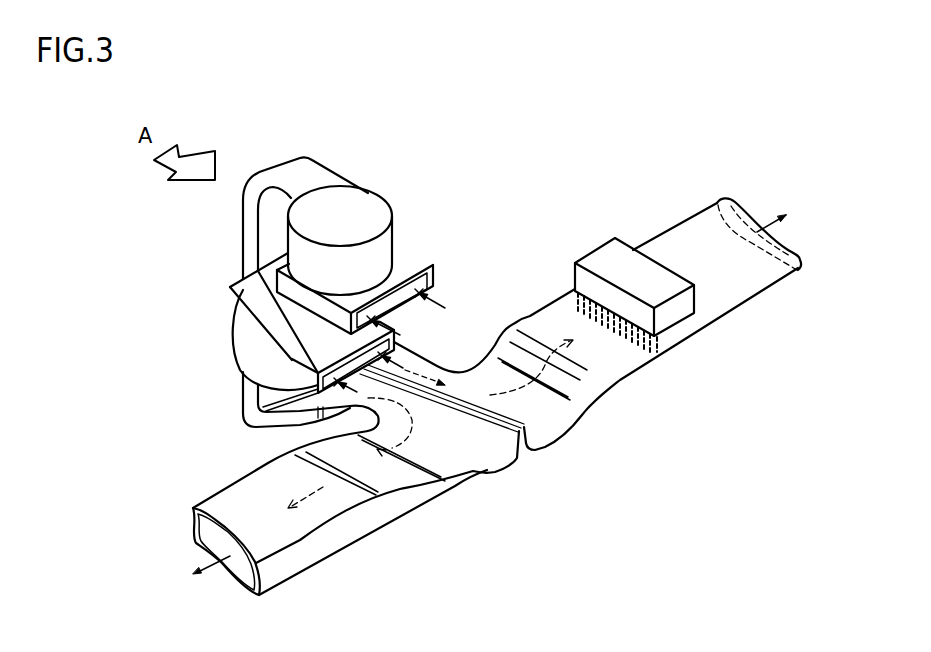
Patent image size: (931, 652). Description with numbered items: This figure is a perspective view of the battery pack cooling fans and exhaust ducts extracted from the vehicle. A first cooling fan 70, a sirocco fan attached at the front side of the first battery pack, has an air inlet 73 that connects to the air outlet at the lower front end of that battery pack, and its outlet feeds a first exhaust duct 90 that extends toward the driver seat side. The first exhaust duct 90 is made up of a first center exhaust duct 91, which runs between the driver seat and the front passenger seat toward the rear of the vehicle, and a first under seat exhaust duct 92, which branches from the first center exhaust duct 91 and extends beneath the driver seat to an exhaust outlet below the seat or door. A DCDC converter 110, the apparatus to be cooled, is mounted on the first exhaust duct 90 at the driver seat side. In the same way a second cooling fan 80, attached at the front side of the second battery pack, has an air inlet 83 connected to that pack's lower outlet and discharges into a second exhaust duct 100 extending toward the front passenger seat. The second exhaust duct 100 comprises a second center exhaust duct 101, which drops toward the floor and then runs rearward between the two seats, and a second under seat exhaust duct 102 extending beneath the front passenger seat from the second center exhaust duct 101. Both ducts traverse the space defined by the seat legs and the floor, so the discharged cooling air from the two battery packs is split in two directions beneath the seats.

The first cooling fan 70 is at (245, 341).
The air inlet 73 is at (282, 401).
The second cooling fan 80 is at (367, 202).
The air inlet 83 is at (433, 282).
The first exhaust duct 90 is at (590, 203).
The first center exhaust duct 91 is at (440, 364).
The first under seat exhaust duct 92 is at (680, 250).
The second exhaust duct 100 is at (165, 422).
The second center exhaust duct 101 is at (250, 244).
The second under seat exhaust duct 102 is at (263, 489).
The DCDC converter 110 is at (652, 284).